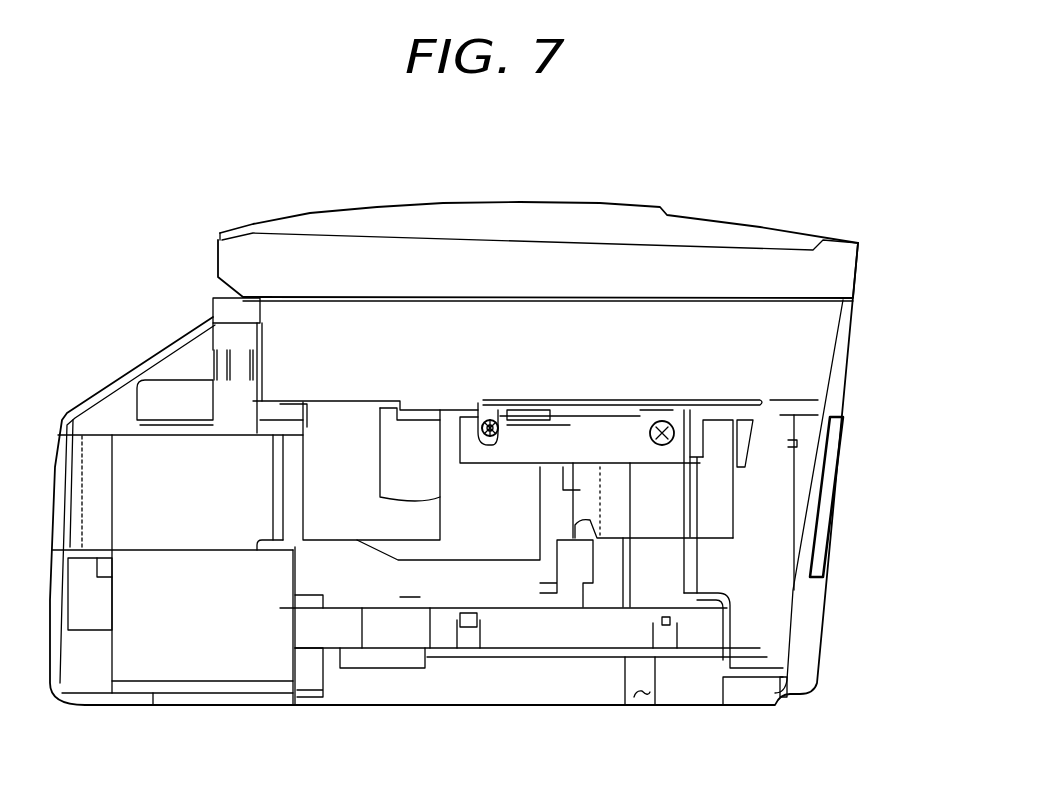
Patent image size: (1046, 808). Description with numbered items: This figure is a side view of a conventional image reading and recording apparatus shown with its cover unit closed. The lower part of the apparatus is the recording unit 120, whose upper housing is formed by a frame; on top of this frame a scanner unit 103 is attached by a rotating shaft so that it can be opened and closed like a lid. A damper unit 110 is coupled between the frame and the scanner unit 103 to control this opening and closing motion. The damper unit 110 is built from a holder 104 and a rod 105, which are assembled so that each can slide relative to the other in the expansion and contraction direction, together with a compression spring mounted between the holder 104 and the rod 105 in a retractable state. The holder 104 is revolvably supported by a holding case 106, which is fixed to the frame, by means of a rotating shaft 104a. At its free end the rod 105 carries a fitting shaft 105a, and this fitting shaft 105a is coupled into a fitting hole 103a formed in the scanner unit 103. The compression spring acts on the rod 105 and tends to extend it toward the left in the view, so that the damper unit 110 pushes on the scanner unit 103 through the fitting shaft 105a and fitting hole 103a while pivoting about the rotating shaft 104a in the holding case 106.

The scanner unit 103 is at (470, 337).
The fitting hole 103a is at (482, 403).
The holder 104 is at (578, 415).
The rotating shaft 104a is at (672, 426).
The rod 105 is at (492, 420).
The fitting shaft 105a is at (492, 436).
The holding case 106 is at (610, 457).
The damper unit 110 is at (608, 405).
The recording unit 120 is at (333, 570).